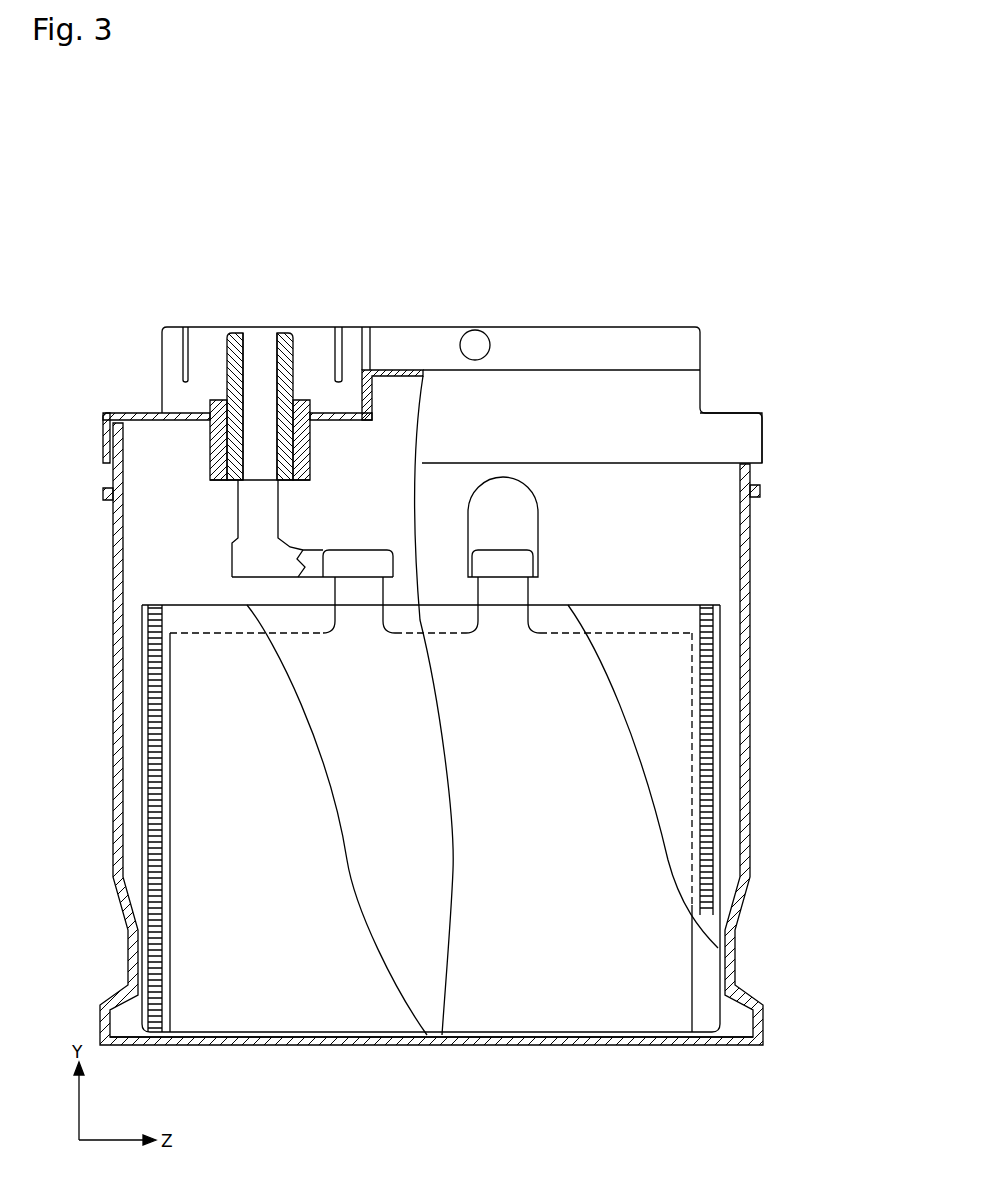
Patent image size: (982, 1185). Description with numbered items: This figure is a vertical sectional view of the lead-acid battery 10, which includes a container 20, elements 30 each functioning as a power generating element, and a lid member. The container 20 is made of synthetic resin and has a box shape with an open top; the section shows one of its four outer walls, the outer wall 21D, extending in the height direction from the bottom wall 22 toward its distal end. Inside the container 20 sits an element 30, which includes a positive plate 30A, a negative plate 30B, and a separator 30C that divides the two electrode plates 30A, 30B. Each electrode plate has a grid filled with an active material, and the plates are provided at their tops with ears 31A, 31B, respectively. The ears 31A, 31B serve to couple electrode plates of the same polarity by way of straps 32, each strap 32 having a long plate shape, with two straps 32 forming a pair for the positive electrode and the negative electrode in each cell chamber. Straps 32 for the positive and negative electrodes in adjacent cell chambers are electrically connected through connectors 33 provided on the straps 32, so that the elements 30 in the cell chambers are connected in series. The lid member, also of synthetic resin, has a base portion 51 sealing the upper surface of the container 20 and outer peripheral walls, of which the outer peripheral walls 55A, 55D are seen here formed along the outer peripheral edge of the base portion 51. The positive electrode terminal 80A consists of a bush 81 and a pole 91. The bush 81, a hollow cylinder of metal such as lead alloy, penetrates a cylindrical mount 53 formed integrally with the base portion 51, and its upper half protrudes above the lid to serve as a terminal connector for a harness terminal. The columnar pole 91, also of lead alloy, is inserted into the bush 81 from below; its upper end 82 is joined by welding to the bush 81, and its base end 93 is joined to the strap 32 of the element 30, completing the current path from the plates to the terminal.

The lead-acid battery 10 is at (621, 307).
The container 20 is at (409, 768).
The outer wall 21D is at (113, 560).
The bottom wall 22 is at (503, 1046).
The element 30 is at (812, 690).
The positive plate 30A is at (337, 947).
The negative plate 30B is at (615, 753).
The separator 30C is at (673, 780).
The ear 31A is at (355, 595).
The ear 31B is at (515, 596).
The strap 32 is at (359, 554).
The connector 33 is at (492, 506).
The base portion 51 is at (364, 402).
The cylindrical mount 53 is at (308, 442).
The outer peripheral wall 55A is at (718, 427).
The outer peripheral wall 55D is at (100, 455).
The positive electrode terminal 80A is at (211, 337).
The bush 81 is at (293, 358).
The upper end 82 is at (257, 345).
The pole 91 is at (250, 448).
The base end 93 is at (247, 566).